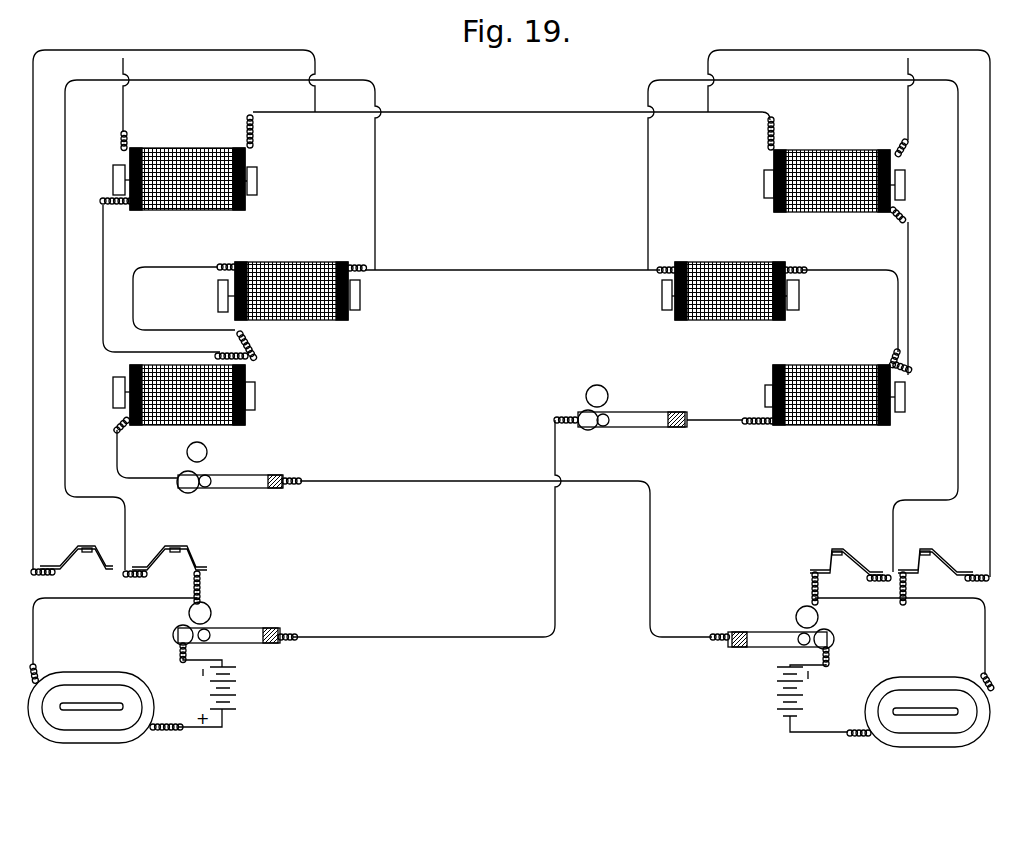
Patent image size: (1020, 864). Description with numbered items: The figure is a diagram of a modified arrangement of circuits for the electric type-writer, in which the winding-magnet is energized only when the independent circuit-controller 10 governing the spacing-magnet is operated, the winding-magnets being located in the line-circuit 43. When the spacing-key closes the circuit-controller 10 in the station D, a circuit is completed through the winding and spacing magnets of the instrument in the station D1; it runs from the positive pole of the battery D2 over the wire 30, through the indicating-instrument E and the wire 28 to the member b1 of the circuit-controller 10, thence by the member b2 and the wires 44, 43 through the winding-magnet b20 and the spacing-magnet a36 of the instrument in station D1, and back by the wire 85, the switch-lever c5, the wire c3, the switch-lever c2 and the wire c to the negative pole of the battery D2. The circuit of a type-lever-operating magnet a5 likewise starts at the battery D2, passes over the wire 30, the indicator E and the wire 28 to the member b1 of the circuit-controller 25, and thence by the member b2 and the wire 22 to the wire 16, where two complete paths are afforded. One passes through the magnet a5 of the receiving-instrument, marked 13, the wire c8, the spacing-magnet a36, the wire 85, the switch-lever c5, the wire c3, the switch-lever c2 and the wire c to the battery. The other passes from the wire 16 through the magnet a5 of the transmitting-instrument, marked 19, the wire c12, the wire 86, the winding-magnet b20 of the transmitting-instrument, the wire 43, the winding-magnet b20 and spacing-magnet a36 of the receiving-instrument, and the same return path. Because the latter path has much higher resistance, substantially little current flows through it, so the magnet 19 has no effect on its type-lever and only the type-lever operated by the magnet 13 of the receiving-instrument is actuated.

The type-lever-operating magnet of the receiving-instrument 13 is at (501, 163).
The type-lever-operating magnet of the transmitting-instrument 19 is at (815, 150).
The type-lever-operating magnet a5 is at (153, 147).
The wire c8 is at (122, 108).
The wire 16 is at (478, 115).
The wire 22 is at (707, 66).
The wire 44 is at (647, 200).
The wire c12 is at (910, 120).
The winding-magnet b20 is at (290, 321).
The line-circuit wire 43 is at (512, 262).
The wire 86 is at (842, 318).
The spacing-magnet a36 is at (163, 395).
The station D1 is at (187, 395).
The station D is at (816, 395).
The wire 85 is at (211, 476).
The switch-lever c5 is at (243, 488).
The wire c3 is at (506, 547).
The circuit-controller 10 is at (838, 538).
The circuit-controller 25 is at (935, 546).
The member of circuit-controller b1 is at (818, 564).
The member of circuit-controller b2 is at (858, 560).
The indicating-instrument E is at (509, 696).
The switch-lever c2 is at (762, 631).
The wire c is at (820, 666).
The battery D2 is at (773, 697).
The wire 30 is at (830, 738).
The wire 28 is at (984, 630).